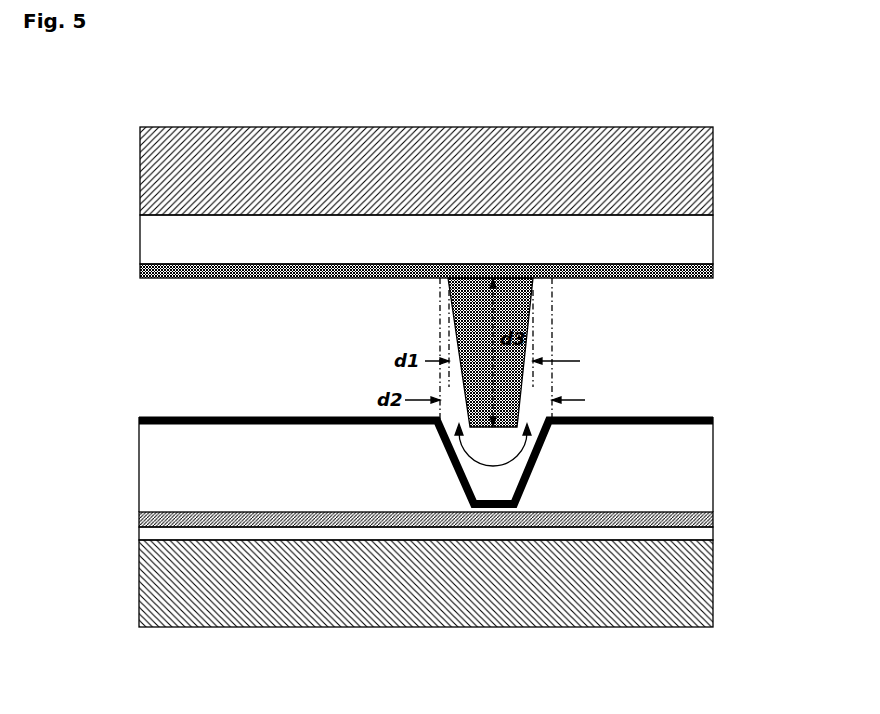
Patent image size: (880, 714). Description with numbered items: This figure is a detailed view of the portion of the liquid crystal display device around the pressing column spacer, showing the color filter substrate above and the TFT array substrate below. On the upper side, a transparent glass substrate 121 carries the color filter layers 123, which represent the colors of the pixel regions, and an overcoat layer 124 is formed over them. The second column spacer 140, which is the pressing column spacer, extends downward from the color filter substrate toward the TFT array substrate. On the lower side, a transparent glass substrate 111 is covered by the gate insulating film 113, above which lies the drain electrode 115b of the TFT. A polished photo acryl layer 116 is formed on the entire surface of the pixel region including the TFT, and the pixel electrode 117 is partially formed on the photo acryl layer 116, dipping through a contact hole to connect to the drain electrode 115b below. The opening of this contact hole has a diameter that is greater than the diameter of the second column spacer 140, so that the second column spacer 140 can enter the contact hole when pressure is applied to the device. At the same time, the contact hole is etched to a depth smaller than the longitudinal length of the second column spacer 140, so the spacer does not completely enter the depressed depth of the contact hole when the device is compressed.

The transparent glass substrate 121 is at (600, 137).
The color filter layers 123 is at (701, 221).
The overcoat layer 124 is at (703, 272).
The second column spacer 140 is at (467, 295).
The pixel electrode 117 is at (650, 424).
The photo acryl layer 116 is at (705, 457).
The drain electrode 115b is at (700, 522).
The gate insulating film 113 is at (701, 536).
The transparent glass substrate 111 is at (537, 613).